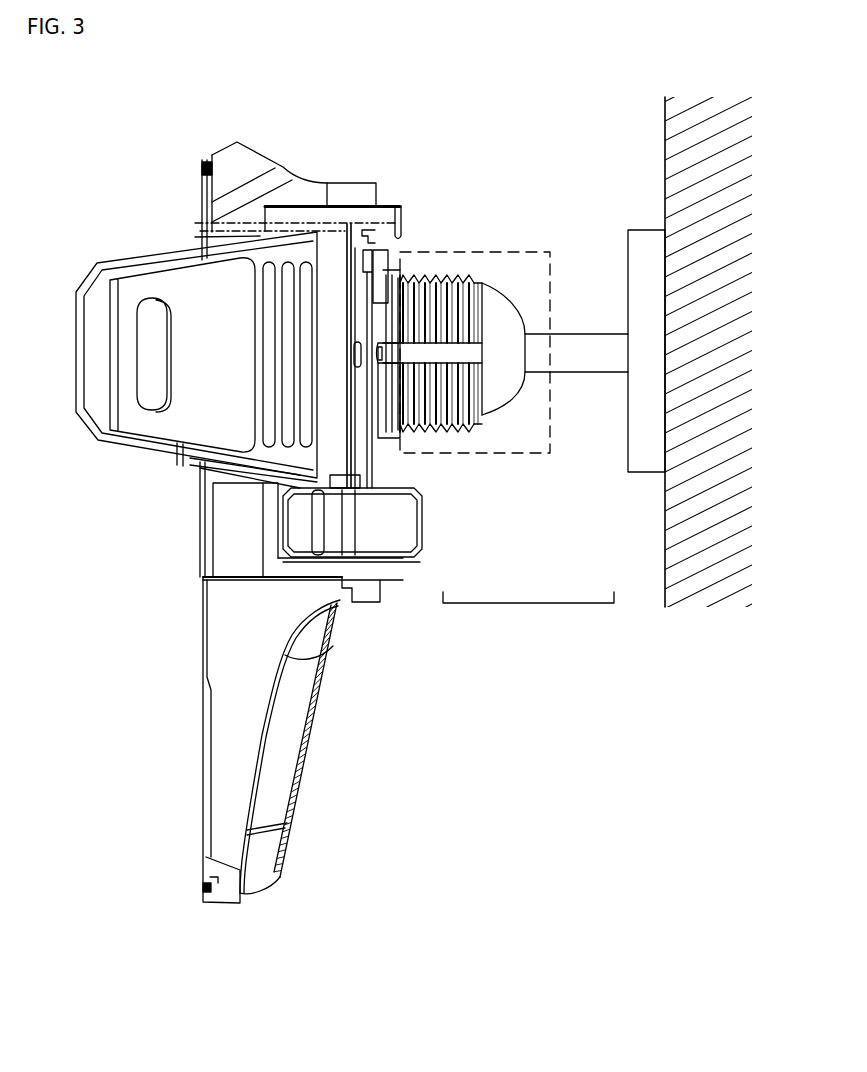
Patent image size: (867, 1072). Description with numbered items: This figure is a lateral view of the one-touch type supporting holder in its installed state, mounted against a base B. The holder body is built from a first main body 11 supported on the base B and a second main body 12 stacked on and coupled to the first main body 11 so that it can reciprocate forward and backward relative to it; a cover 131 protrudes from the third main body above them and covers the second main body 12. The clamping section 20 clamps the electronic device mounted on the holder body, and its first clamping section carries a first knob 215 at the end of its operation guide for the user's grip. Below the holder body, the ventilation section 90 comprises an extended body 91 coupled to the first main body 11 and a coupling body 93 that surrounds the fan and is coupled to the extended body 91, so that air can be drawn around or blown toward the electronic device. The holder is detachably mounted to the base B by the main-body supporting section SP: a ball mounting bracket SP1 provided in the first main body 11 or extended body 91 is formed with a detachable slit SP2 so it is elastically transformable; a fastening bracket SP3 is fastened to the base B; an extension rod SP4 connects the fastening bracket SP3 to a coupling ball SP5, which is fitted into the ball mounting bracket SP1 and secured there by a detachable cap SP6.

The base B is at (675, 181).
The first main body 11 is at (398, 234).
The second main body 12 is at (370, 233).
The cover 131 is at (355, 190).
The clamping section 20 is at (124, 250).
The first knob 215 is at (388, 537).
The ventilation section 90 is at (201, 631).
The extended body 91 is at (290, 727).
The coupling body 93 is at (237, 763).
The main-body supporting section SP is at (528, 613).
The ball mounting bracket SP1 is at (428, 436).
The detachable slit SP2 is at (427, 352).
The fastening bracket SP3 is at (641, 478).
The extension rod SP4 is at (585, 365).
The coupling ball SP5 is at (497, 383).
The detachable cap SP6 is at (483, 453).